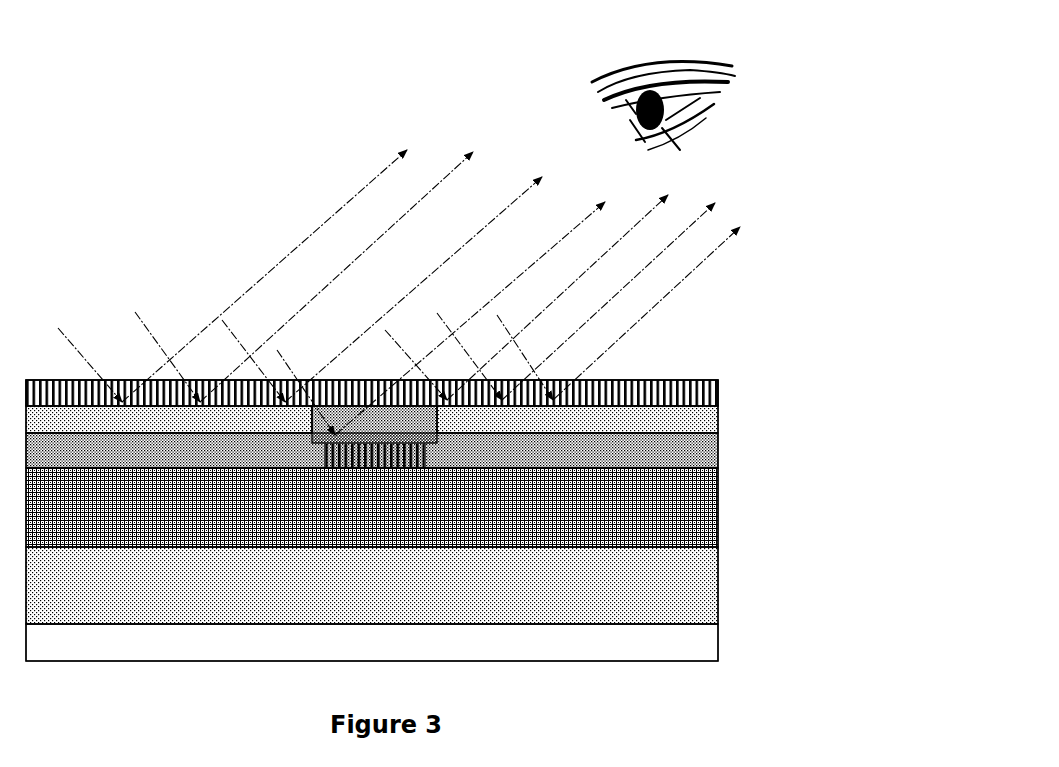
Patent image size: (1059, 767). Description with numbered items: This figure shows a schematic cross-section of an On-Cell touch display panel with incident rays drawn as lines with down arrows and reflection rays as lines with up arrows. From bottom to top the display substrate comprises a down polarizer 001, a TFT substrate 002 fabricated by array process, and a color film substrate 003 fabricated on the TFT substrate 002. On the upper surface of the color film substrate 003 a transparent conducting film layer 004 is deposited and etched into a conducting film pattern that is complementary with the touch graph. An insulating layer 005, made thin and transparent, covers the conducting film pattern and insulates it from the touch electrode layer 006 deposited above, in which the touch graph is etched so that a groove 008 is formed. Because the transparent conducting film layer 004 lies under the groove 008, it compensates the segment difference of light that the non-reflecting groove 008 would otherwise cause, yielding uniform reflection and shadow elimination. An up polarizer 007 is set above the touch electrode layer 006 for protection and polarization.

The down polarizer 001 is at (715, 641).
The TFT substrate 002 is at (705, 596).
The color film substrate 003 is at (718, 506).
The transparent conducting film layer 004 is at (437, 425).
The insulating layer 005 is at (637, 447).
The touch electrode layer 006 is at (720, 410).
The up polarizer 007 is at (718, 394).
The groove 008 is at (336, 415).